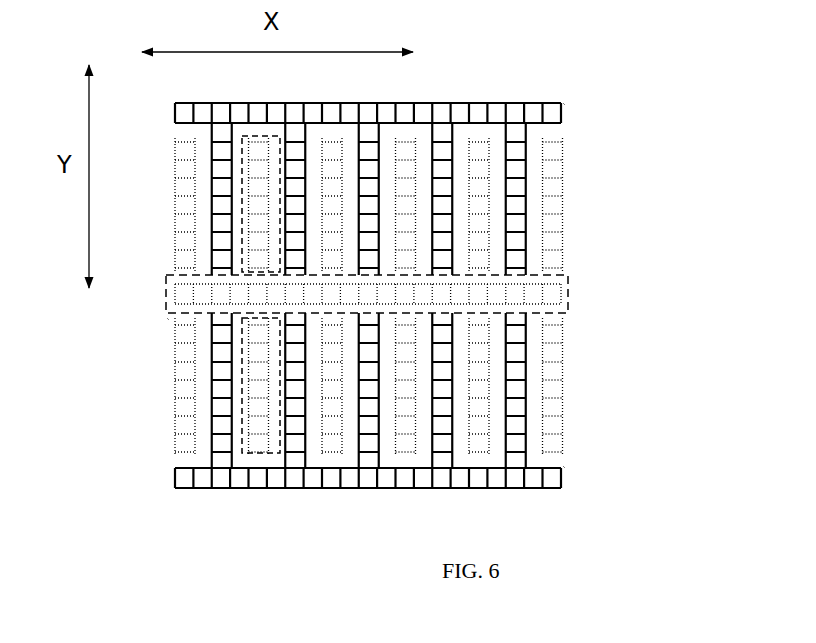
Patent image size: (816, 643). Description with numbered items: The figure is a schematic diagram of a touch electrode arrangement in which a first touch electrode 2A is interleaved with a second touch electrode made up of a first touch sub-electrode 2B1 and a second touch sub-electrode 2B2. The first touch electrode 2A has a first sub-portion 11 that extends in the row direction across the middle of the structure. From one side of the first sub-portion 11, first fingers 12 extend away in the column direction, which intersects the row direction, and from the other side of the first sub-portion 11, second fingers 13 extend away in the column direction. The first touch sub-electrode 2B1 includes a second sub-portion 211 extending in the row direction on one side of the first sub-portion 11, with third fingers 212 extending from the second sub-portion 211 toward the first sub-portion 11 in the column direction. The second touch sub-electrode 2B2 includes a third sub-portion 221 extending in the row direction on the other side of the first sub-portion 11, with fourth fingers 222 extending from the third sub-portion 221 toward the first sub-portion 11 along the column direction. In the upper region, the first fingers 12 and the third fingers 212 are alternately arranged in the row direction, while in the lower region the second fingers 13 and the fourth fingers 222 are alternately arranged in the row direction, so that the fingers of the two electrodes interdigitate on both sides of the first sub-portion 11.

The second sub-portion 211 is at (490, 110).
The third fingers 212 is at (527, 180).
The third sub-portion 221 is at (490, 488).
The fourth fingers 222 is at (525, 395).
The first sub-portion 11 is at (168, 280).
The first fingers 12 is at (253, 198).
The second fingers 13 is at (255, 355).
The first touch sub-electrode 2B1 is at (565, 105).
The second touch sub-electrode 2B2 is at (565, 468).
The first touch electrode 2A is at (167, 318).